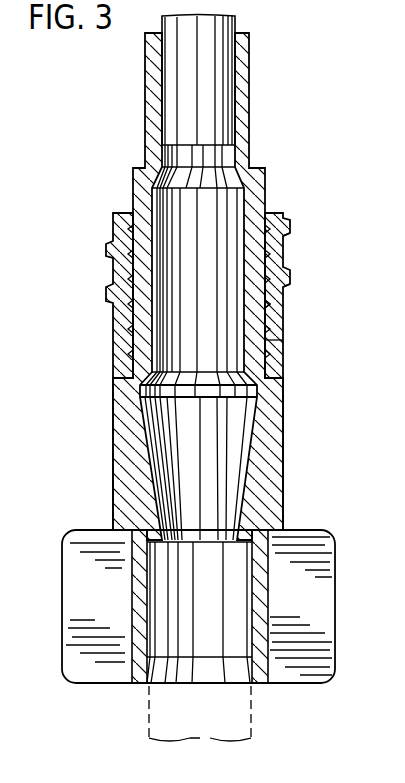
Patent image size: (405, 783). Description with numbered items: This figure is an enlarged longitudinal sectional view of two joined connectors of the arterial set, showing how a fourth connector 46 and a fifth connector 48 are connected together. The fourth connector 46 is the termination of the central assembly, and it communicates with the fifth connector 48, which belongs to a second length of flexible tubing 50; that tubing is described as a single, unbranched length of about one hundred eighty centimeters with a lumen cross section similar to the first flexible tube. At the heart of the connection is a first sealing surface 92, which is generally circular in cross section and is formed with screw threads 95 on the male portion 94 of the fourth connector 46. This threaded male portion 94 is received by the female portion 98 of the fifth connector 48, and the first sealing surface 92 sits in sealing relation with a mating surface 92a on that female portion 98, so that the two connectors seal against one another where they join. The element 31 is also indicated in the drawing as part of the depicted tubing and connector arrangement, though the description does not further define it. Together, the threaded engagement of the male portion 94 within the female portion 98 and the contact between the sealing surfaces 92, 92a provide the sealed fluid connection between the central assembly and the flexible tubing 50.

The tube 31 is at (215, 107).
The fourth connector 46 is at (270, 184).
The fifth connector 48 is at (272, 466).
The second length of flexible tubing 50 is at (192, 706).
The first sealing surface 92 is at (288, 236).
The surface 92a is at (285, 293).
The male portion 94 is at (276, 307).
The screw threads 95 is at (285, 266).
The female portion 98 is at (274, 345).